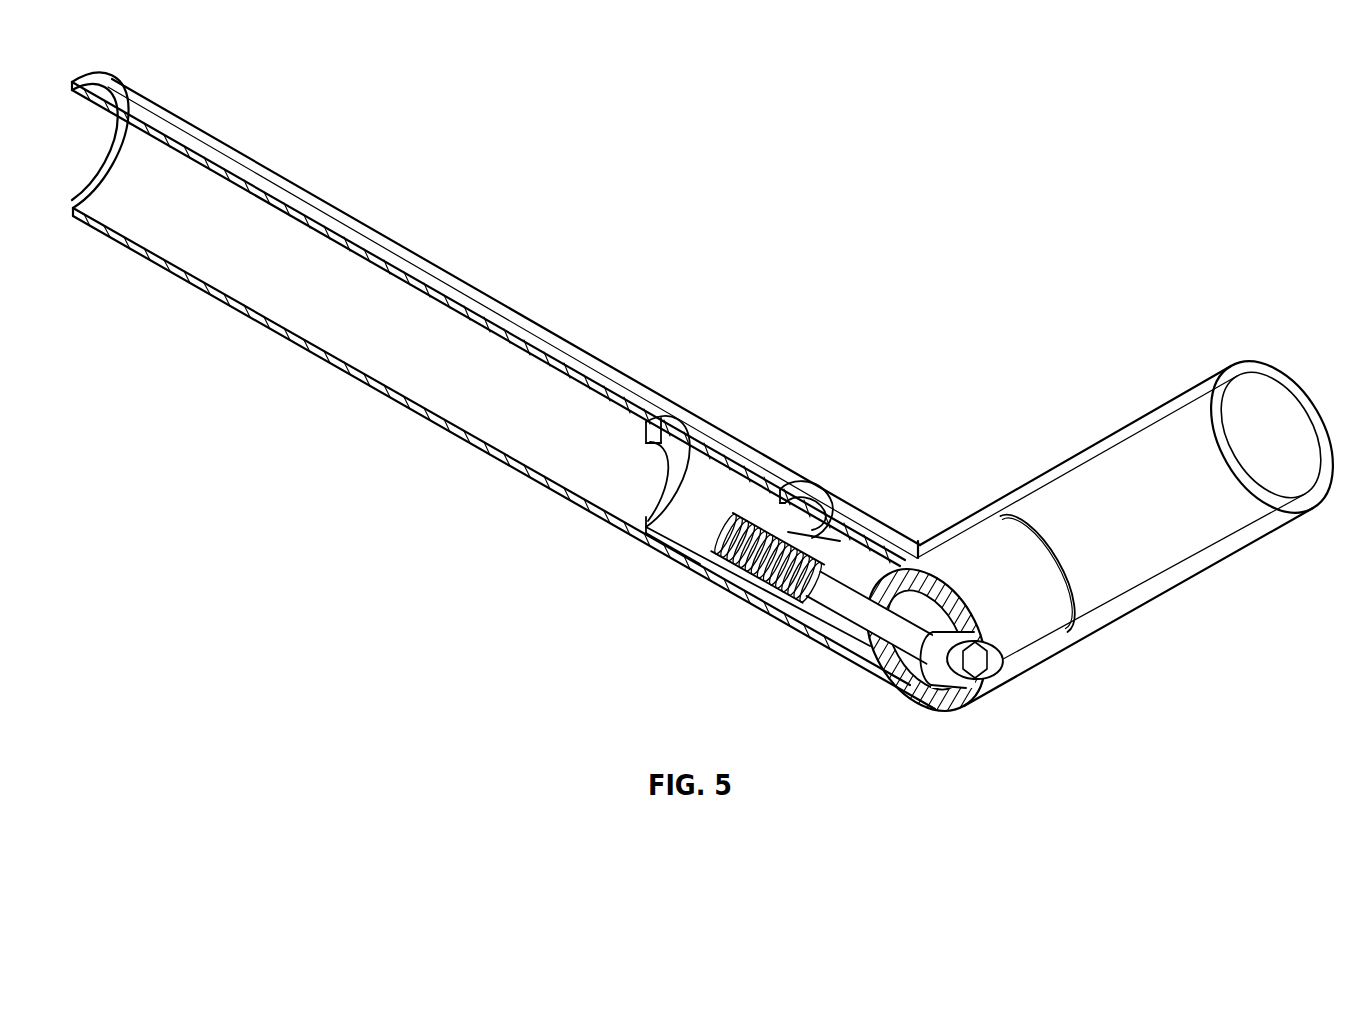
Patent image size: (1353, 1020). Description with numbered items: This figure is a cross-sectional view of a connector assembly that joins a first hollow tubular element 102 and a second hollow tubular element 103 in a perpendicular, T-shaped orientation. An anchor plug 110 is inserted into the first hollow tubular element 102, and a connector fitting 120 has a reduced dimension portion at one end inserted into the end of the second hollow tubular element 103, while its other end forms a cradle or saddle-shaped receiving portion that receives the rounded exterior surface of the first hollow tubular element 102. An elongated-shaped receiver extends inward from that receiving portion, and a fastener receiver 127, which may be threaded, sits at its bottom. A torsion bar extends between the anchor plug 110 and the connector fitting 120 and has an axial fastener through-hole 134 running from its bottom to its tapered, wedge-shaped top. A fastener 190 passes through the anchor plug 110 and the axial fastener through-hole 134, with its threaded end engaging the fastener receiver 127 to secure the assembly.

The first hollow tubular element 102 is at (1198, 530).
The second hollow tubular element 103 is at (313, 222).
The anchor plug 110 is at (1030, 632).
The connector fitting 120 is at (711, 418).
The fastener receiver 127 is at (705, 543).
The axial fastener through-hole 134 is at (845, 540).
The fastener 190 is at (862, 620).